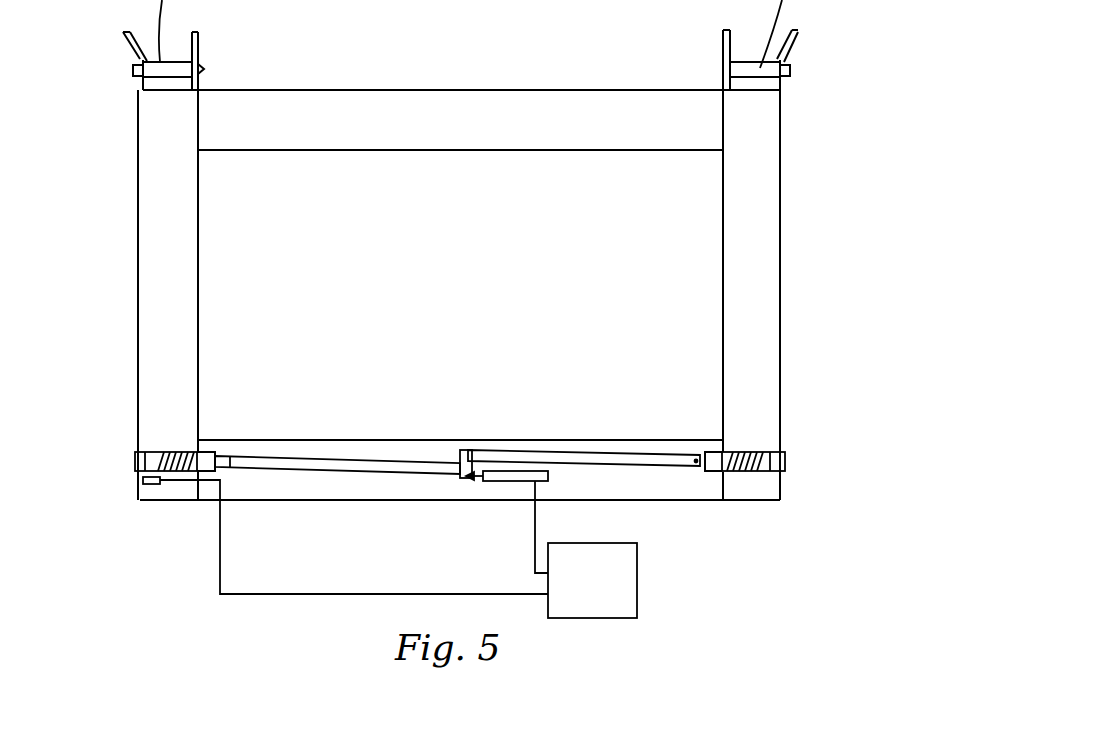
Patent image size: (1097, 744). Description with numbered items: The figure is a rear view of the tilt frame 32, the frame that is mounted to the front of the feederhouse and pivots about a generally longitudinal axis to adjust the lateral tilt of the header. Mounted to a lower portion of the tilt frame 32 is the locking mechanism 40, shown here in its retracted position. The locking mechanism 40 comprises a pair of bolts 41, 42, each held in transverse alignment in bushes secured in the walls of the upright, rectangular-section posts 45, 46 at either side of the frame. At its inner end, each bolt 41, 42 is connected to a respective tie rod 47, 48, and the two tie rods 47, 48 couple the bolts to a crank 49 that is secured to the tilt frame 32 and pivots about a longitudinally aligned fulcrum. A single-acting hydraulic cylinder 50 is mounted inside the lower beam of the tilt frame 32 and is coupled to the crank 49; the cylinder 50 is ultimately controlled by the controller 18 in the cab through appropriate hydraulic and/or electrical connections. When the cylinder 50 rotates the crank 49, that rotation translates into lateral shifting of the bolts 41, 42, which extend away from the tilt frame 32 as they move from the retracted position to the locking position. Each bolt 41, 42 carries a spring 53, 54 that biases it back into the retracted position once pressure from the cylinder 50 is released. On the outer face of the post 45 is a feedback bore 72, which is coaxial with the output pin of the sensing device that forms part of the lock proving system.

The controller 18 is at (638, 580).
The tilt frame 32 is at (770, 240).
The locking mechanism 40 is at (452, 495).
The bolt 41 is at (140, 452).
The bolt 42 is at (780, 452).
The post 45 is at (148, 252).
The post 46 is at (770, 306).
The tie rod 47 is at (318, 460).
The tie rod 48 is at (622, 458).
The crank 49 is at (455, 456).
The single-acting hydraulic cylinder 50 is at (468, 452).
The spring 53 is at (182, 452).
The spring 54 is at (735, 452).
The feedback bore 72 is at (135, 493).